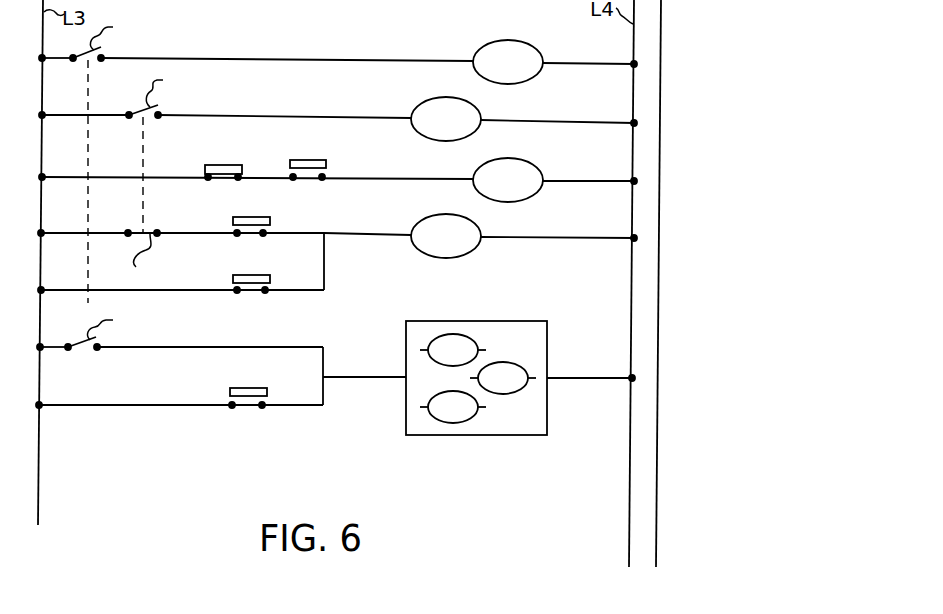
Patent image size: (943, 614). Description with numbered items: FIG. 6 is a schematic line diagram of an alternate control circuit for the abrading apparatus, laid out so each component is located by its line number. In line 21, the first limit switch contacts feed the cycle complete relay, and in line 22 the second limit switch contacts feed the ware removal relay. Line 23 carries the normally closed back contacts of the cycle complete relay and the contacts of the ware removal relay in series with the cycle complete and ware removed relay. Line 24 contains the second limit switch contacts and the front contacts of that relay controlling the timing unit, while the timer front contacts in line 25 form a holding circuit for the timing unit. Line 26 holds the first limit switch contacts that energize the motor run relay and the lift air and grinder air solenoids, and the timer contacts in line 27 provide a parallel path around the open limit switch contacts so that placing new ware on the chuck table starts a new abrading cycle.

The line 21 is at (807, 77).
The line 22 is at (661, 123).
The line 23 is at (661, 181).
The line 24 is at (661, 238).
The line 25 is at (660, 295).
The line 26 is at (660, 353).
The line 27 is at (660, 410).